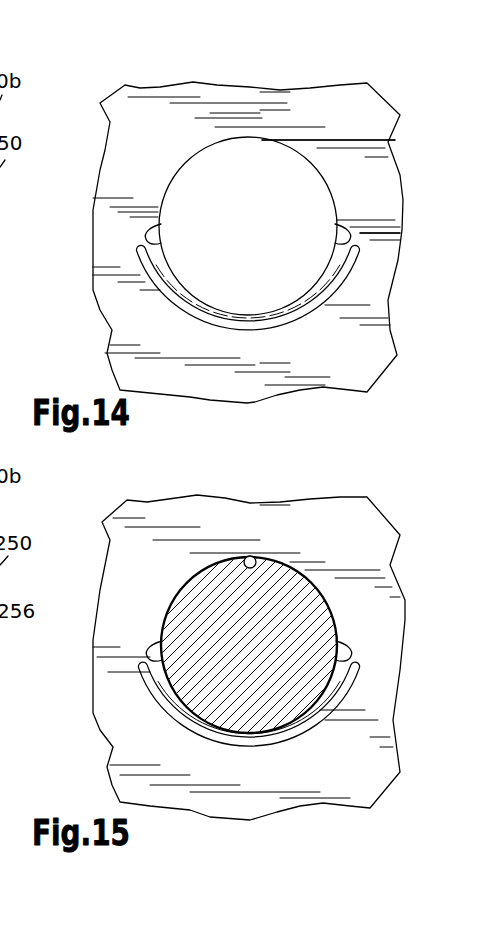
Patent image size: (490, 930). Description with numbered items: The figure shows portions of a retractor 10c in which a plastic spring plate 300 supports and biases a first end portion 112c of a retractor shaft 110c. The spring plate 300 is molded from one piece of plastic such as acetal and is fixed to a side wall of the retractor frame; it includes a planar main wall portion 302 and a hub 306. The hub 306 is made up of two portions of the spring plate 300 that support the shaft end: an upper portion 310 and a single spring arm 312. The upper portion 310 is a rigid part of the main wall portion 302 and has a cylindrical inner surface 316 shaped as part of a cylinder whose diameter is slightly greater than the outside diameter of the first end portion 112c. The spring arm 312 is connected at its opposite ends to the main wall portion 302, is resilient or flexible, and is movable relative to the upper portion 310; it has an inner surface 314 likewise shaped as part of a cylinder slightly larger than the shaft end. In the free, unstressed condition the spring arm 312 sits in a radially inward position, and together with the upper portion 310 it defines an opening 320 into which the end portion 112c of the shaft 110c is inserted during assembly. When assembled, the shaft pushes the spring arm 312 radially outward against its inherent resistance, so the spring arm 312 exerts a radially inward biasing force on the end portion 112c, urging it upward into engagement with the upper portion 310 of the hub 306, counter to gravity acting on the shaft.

In FIG. 14, the retractor 10c is at (407, 334).
In FIG. 15, the retractor 10c is at (394, 502).
In FIG. 14, the spring plate 300 is at (400, 263).
In FIG. 15, the spring plate 300 is at (398, 568).
In FIG. 14, the main wall portion 302 is at (363, 134).
In FIG. 14, the hub 306 is at (366, 202).
In FIG. 14, the upper portion 310 is at (188, 135).
In FIG. 15, the upper portion 310 is at (302, 553).
In FIG. 14, the spring arm 312 is at (205, 301).
In FIG. 15, the spring arm 312 is at (303, 727).
In FIG. 14, the inner surface 314 is at (255, 312).
In FIG. 14, the cylindrical inner surface 316 is at (303, 158).
In FIG. 15, the cylindrical inner surface 316 is at (245, 556).
In FIG. 14, the opening 320 is at (268, 233).
In FIG. 15, the retractor shaft 110c is at (165, 612).
In FIG. 15, the first end portion 112c is at (210, 600).